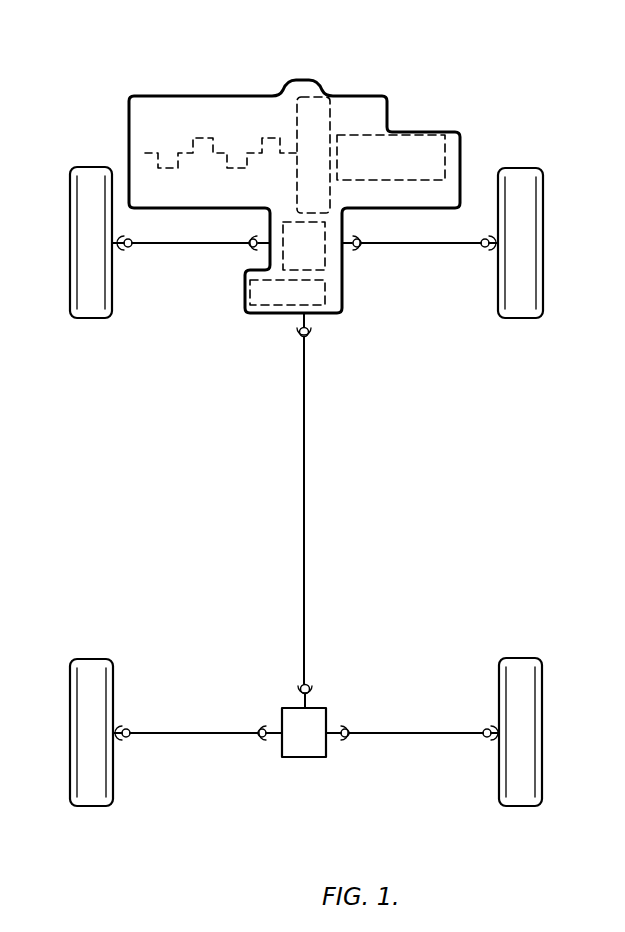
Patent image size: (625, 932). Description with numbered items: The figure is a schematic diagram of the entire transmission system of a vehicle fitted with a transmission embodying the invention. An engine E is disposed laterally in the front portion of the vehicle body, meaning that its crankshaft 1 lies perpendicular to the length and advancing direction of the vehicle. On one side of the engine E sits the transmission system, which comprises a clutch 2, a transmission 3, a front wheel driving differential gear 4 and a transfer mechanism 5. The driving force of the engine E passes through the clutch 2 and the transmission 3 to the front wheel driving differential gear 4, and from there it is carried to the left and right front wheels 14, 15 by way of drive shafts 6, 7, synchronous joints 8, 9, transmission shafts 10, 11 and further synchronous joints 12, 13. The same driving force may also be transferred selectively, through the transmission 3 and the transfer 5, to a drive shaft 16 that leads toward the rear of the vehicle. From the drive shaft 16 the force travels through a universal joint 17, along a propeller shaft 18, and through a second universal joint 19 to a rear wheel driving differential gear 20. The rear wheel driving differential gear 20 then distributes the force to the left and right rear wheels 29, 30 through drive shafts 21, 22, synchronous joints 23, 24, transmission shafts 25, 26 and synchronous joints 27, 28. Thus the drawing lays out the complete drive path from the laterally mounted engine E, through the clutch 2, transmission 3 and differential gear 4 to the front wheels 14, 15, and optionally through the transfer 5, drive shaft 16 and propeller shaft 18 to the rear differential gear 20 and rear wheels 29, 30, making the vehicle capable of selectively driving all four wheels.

The engine E is at (184, 86).
The crankshaft 1 is at (256, 154).
The clutch 2 is at (324, 105).
The transmission 3 is at (416, 134).
The front wheel driving differential gear 4 is at (291, 226).
The transfer mechanism 5 is at (250, 295).
The drive shaft 6 is at (264, 243).
The drive shaft 7 is at (347, 248).
The synchronous joint 8 is at (247, 242).
The synchronous joint 9 is at (360, 242).
The transmission shaft 10 is at (182, 247).
The transmission shaft 11 is at (421, 247).
The synchronous joint 12 is at (129, 249).
The synchronous joint 13 is at (483, 250).
The left front wheel 14 is at (78, 195).
The right front wheel 15 is at (530, 202).
The drive shaft 16 is at (298, 323).
The universal joint 17 is at (309, 335).
The propeller shaft 18 is at (304, 497).
The universal joint 19 is at (301, 687).
The rear wheel driving differential gear 20 is at (303, 750).
The drive shaft 21 is at (272, 736).
The drive shaft 22 is at (334, 736).
The synchronous joint 23 is at (257, 731).
The synchronous joint 24 is at (350, 731).
The transmission shaft 25 is at (182, 738).
The transmission shaft 26 is at (428, 738).
The synchronous joint 27 is at (128, 727).
The synchronous joint 28 is at (483, 728).
The left rear wheel 29 is at (80, 775).
The right rear wheel 30 is at (530, 775).